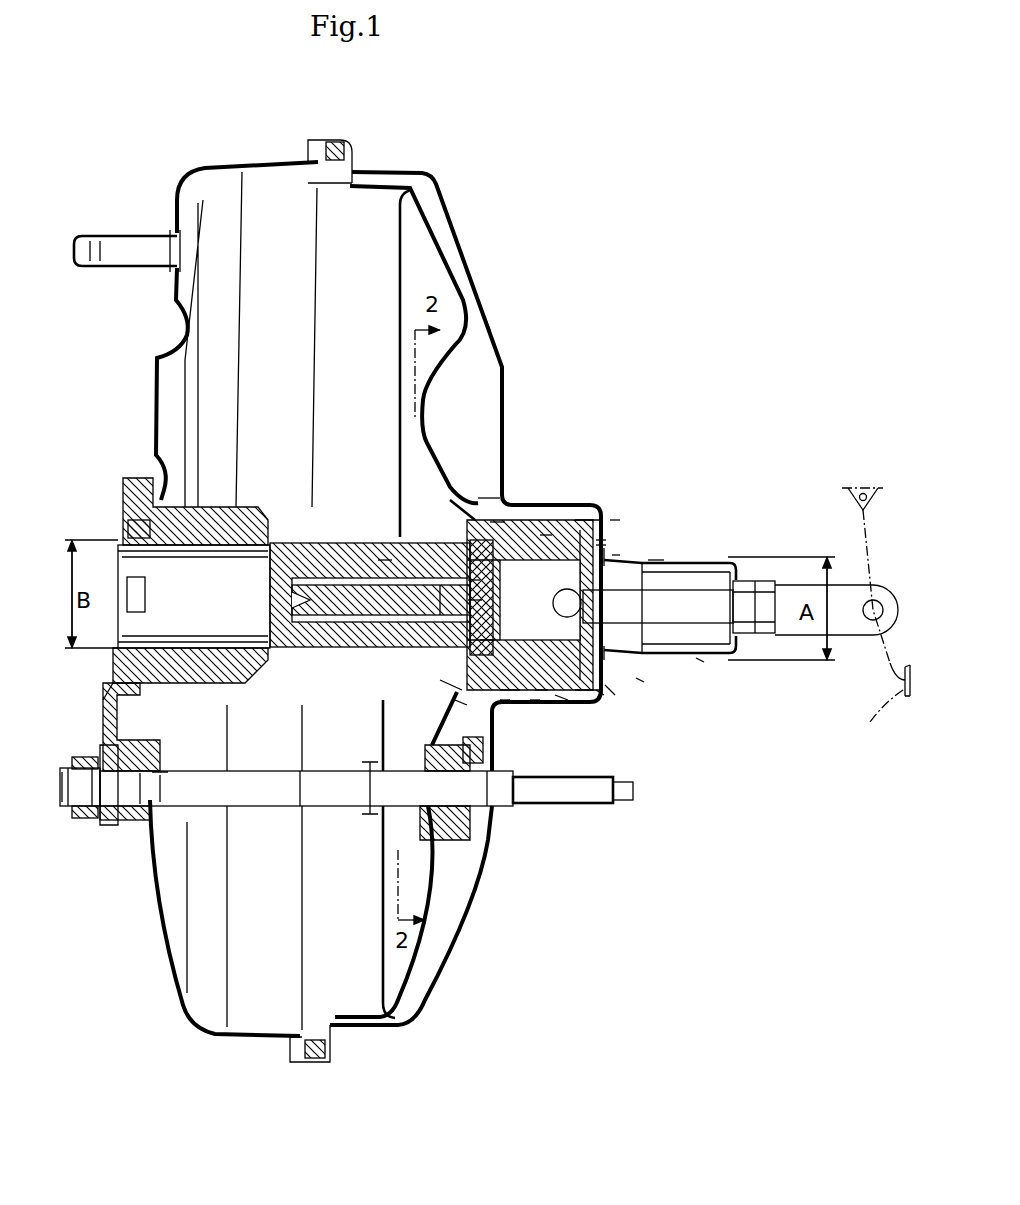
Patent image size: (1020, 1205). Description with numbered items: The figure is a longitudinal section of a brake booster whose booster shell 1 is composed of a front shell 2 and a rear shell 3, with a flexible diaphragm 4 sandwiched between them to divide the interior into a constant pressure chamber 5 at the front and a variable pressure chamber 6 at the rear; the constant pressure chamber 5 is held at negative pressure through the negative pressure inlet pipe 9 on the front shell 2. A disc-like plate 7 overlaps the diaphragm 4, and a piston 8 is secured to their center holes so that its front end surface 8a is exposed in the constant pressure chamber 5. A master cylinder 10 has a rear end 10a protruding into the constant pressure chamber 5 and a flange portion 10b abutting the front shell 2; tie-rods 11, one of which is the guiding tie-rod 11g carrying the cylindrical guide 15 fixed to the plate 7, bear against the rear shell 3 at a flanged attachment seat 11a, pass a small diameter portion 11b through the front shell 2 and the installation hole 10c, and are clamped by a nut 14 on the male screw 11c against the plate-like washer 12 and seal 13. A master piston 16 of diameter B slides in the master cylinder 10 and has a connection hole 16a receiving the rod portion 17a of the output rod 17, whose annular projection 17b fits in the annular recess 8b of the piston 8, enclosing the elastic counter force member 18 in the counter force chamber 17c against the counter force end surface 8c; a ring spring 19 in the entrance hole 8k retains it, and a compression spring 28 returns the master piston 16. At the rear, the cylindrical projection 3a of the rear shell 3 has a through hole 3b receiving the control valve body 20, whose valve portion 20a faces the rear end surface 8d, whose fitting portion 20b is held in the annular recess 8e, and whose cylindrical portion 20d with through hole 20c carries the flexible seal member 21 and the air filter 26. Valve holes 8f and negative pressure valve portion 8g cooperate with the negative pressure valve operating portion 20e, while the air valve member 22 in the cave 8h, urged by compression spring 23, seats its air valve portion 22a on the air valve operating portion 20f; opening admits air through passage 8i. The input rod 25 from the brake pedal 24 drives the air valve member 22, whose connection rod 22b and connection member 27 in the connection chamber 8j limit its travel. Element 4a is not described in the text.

The booster shell 1 is at (406, 163).
The front shell 2 is at (222, 161).
The rear shell 3 is at (455, 218).
The cylindrical projection 3a is at (584, 506).
The through hole 3b is at (613, 690).
The flexible diaphragm 4 is at (372, 172).
The rear shell boss 4a is at (478, 838).
The constant pressure chamber 5 is at (270, 176).
The variable pressure chamber 6 is at (488, 320).
The disc-like plate 7 is at (462, 275).
The piston 8 is at (522, 518).
The front end surface 8a is at (455, 520).
The annular recess 8b is at (513, 702).
The counter force end surface 8c is at (506, 702).
The rear end surface 8d is at (602, 545).
The annular recess 8e is at (541, 702).
The valve holes 8f is at (546, 535).
The negative pressure valve portion 8g is at (602, 540).
The cave 8h is at (562, 702).
The passage 8i is at (537, 702).
The connection chamber 8j is at (468, 580).
The entrance hole 8k is at (456, 705).
The negative pressure inlet pipe 9 is at (140, 236).
The master cylinder 10 is at (121, 556).
The rear end 10a is at (222, 508).
The flange portion 10b is at (103, 700).
The installation hole 10c is at (108, 820).
The tie-rods 11 is at (275, 808).
The flanged attachment seat 11a is at (494, 812).
The small diameter portion 11b is at (143, 808).
The male screw 11c is at (70, 804).
The tie-rod 11g is at (268, 826).
The plate-like washer 12 is at (152, 804).
The seal 13 is at (165, 787).
The nut 14 is at (82, 757).
The cylindrical guide 15 is at (376, 812).
The master piston 16 is at (325, 545).
The connection hole 16a is at (383, 560).
The output rod 17 is at (372, 625).
The rod portion 17a is at (333, 626).
The annular projection 17b is at (478, 712).
The counter force chamber 17c is at (490, 498).
The counter force member 18 is at (498, 522).
The ring spring 19 is at (440, 690).
The control valve body 20 is at (612, 704).
The valve portion 20a is at (650, 560).
The fitting portion 20b is at (615, 520).
The through hole 20c is at (640, 680).
The cylindrical portion 20d is at (700, 660).
The negative pressure valve operating portion 20e is at (615, 555).
The air valve operating portion 20f is at (660, 560).
The flexible seal member 21 is at (712, 590).
The air valve member 22 is at (641, 660).
The air valve portion 22a is at (583, 600).
The connection rod 22b is at (468, 615).
The compression spring 23 is at (600, 690).
The brake pedal 24 is at (876, 617).
The input rod 25 is at (786, 590).
The air filter 26 is at (745, 636).
The connection member 27 is at (480, 645).
The compression spring 28 is at (126, 540).